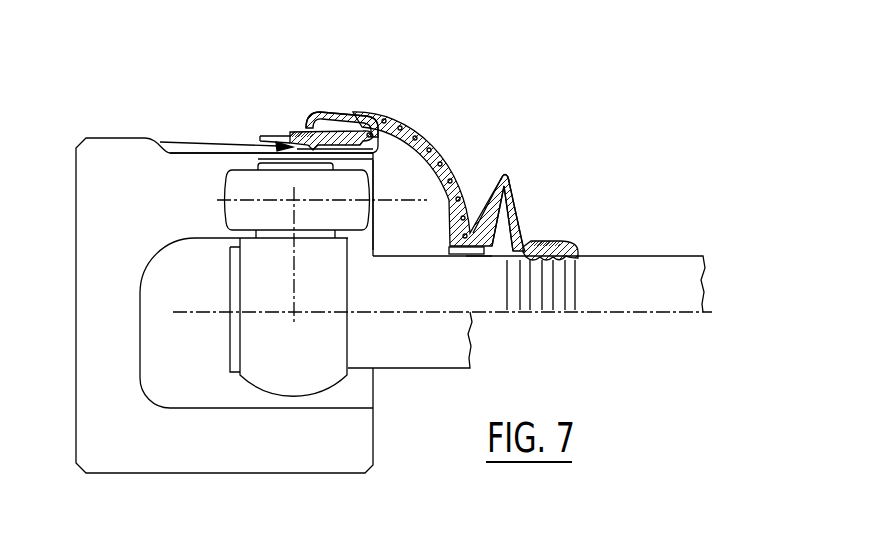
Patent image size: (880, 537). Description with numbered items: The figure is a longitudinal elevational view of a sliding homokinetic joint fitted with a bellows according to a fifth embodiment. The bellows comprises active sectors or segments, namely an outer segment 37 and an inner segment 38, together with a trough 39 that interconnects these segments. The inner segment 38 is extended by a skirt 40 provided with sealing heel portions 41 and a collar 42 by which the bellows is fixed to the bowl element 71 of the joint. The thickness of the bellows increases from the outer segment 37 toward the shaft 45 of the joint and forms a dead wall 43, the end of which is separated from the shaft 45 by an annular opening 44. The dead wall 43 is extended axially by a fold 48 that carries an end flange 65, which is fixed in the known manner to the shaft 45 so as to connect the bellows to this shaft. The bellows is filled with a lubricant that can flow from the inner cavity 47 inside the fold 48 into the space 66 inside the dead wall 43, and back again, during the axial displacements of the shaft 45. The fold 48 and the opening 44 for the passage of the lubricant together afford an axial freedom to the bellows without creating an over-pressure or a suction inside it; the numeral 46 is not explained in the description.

The outer segment 37 is at (345, 111).
The inner segment 38 is at (361, 116).
The trough 39 is at (305, 116).
The skirt 40 is at (281, 136).
The sealing heel portions 41 is at (216, 142).
The collar 42 is at (267, 136).
The dead wall 43 is at (456, 170).
The annular opening 44 is at (466, 258).
The shaft 45 is at (655, 259).
The annular groove 46 is at (476, 254).
The inner cavity 47 is at (503, 224).
The fold 48 is at (513, 173).
The end flange 65 is at (573, 239).
The space 66 is at (403, 197).
The bowl element 71 is at (357, 160).